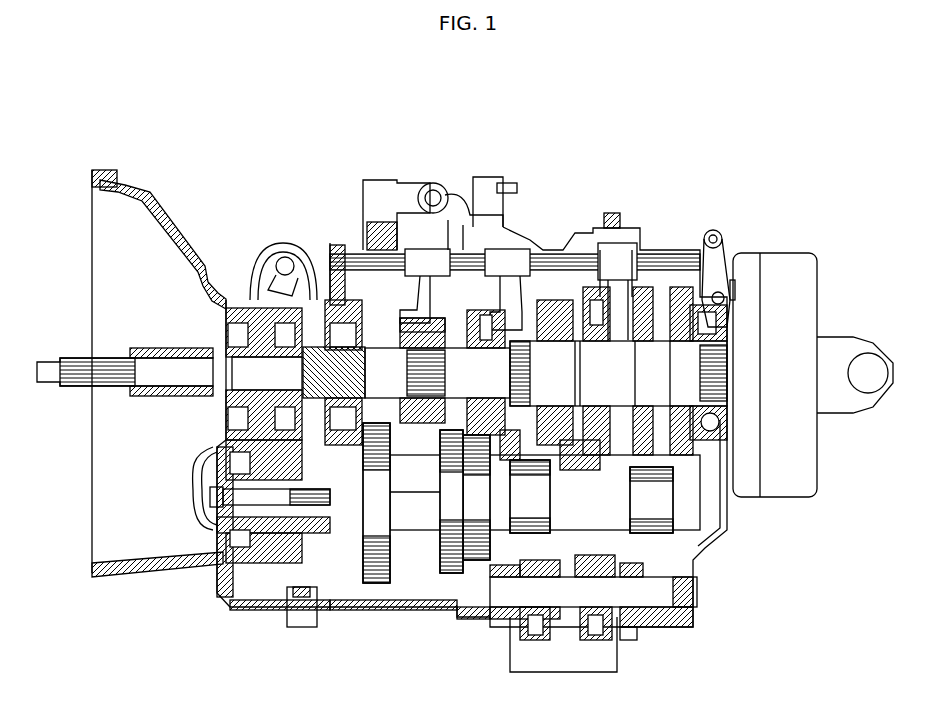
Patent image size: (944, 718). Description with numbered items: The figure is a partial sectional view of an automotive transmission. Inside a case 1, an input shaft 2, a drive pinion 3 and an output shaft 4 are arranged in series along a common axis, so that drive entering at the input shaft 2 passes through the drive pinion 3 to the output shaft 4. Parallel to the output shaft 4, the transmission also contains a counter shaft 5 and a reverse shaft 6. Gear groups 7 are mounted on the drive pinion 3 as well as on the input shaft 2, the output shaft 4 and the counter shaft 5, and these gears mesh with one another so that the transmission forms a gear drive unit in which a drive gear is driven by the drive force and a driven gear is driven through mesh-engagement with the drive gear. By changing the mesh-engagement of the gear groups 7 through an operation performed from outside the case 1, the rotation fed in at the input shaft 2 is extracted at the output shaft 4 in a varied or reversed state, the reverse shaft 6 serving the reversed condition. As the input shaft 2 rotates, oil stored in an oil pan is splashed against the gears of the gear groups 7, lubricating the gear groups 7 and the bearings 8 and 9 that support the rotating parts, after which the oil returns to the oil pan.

The case 1 is at (402, 608).
The input shaft 2 is at (167, 368).
The drive pinion 3 is at (327, 293).
The output shaft 4 is at (636, 285).
The counter shaft 5 is at (450, 520).
The reverse shaft 6 is at (568, 597).
The gear groups 7 is at (375, 578).
The bearing 8 is at (338, 265).
The bearing 9 is at (380, 330).